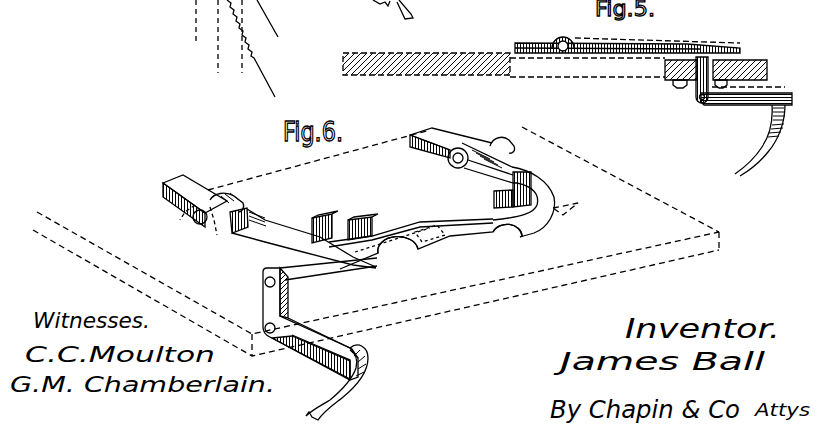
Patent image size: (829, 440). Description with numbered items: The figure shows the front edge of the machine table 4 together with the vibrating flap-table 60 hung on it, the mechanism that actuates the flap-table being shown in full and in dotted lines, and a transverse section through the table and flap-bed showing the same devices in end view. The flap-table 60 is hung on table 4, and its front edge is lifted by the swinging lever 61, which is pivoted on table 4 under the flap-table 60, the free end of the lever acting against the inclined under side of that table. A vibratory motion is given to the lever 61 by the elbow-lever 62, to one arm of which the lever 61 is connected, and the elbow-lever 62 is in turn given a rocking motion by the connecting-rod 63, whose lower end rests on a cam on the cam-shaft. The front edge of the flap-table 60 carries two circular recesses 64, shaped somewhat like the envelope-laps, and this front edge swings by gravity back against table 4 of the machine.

In FIG. 5, the table 4 is at (555, 60).
In FIG. 6, the table 4 is at (376, 241).
In FIG. 5, the flap-table 60 is at (690, 46).
In FIG. 6, the flap-table 60 is at (413, 228).
In FIG. 6, the swinging lever 61 is at (293, 271).
In FIG. 5, the elbow-lever 62 is at (697, 80).
In FIG. 6, the elbow-lever 62 is at (293, 324).
In FIG. 5, the connecting-rod 63 is at (770, 122).
In FIG. 6, the connecting-rod 63 is at (353, 395).
In FIG. 6, the circular recesses 64 is at (450, 248).